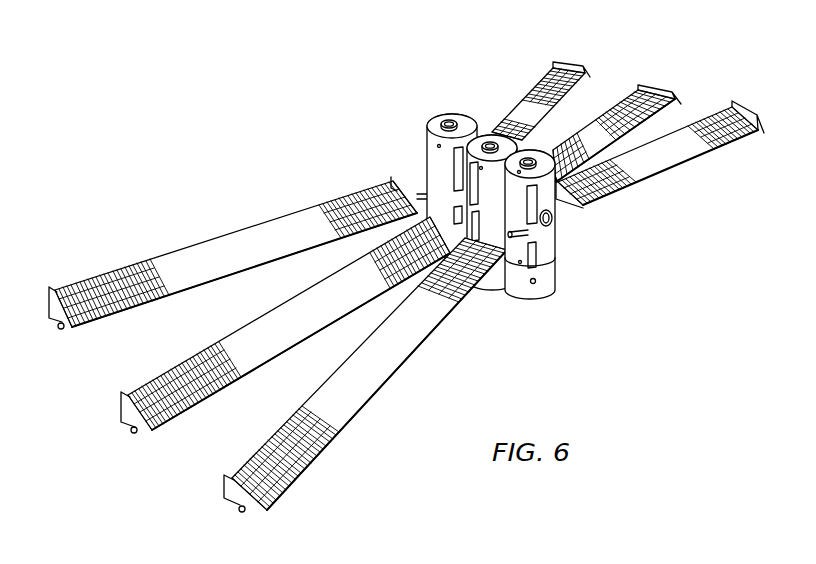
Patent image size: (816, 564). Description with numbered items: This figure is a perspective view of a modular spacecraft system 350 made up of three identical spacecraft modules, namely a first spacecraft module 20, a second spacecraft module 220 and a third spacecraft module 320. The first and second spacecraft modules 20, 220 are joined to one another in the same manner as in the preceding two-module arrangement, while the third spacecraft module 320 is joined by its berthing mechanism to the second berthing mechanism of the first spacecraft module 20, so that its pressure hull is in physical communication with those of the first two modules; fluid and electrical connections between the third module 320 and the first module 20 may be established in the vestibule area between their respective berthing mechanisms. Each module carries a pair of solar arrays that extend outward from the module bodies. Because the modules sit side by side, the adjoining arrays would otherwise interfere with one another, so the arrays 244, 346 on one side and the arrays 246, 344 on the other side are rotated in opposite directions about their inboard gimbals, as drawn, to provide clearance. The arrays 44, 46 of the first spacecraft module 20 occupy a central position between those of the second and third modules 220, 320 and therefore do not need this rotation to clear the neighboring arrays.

The modular spacecraft system 350 is at (354, 139).
The first spacecraft module 20 is at (488, 135).
The third spacecraft module 320 is at (427, 132).
The second spacecraft module 220 is at (562, 257).
The solar array 344 is at (248, 233).
The solar array 44 is at (217, 345).
The solar array 246 is at (366, 387).
The solar array 346 is at (540, 88).
The solar array 46 is at (643, 97).
The solar array 244 is at (692, 148).